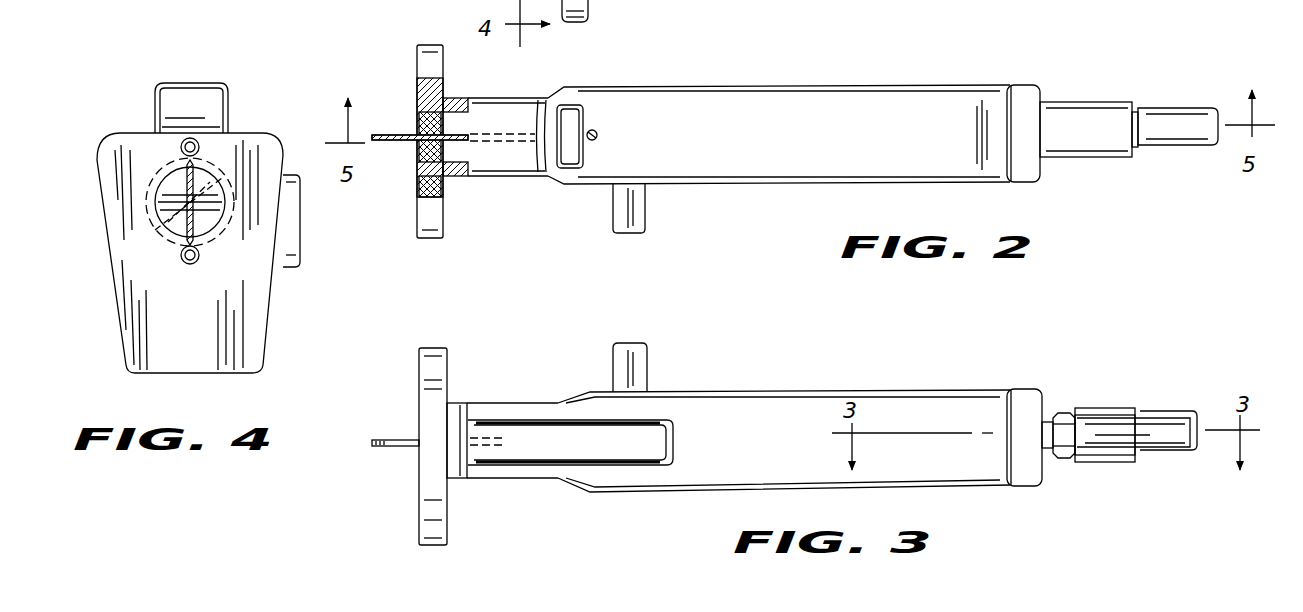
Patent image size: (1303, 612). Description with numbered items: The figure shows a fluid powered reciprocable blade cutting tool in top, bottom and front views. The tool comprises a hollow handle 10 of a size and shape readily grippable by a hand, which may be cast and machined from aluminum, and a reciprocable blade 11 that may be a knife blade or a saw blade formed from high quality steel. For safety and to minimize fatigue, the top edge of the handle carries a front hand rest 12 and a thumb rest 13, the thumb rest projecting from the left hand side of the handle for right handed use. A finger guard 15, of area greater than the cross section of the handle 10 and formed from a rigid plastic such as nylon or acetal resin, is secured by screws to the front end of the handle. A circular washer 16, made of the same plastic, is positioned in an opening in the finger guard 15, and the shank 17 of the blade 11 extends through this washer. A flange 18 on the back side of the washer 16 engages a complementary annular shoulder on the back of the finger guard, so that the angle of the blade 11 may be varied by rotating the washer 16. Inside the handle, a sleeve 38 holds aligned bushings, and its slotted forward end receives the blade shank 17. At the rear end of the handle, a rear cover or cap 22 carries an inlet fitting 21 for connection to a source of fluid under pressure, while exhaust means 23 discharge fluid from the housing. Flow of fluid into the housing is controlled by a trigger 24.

In FIG. 2, the hollow handle 10 is at (764, 82).
In FIG. 3, the hollow handle 10 is at (799, 387).
In FIG. 2, the reciprocable blade 11 is at (381, 131).
In FIG. 3, the reciprocable blade 11 is at (404, 449).
In FIG. 4, the reciprocable blade 11 is at (178, 175).
In FIG. 2, the front hand rest 12 is at (586, 117).
In FIG. 4, the front hand rest 12 is at (193, 83).
In FIG. 2, the thumb rest 13 is at (647, 210).
In FIG. 3, the thumb rest 13 is at (650, 348).
In FIG. 4, the thumb rest 13 is at (302, 243).
In FIG. 2, the finger guard 15 is at (433, 238).
In FIG. 3, the finger guard 15 is at (450, 527).
In FIG. 4, the finger guard 15 is at (265, 337).
In FIG. 2, the circular washer 16 is at (421, 120).
In FIG. 4, the circular washer 16 is at (178, 222).
In FIG. 2, the shank 17 is at (454, 99).
In FIG. 2, the flange 18 is at (441, 188).
In FIG. 4, the flange 18 is at (165, 255).
In FIG. 3, the inlet fitting 21 is at (1065, 459).
In FIG. 2, the rear cover or cap 22 is at (1026, 83).
In FIG. 3, the rear cover or cap 22 is at (1020, 390).
In FIG. 2, the exhaust means 23 is at (1121, 101).
In FIG. 3, the exhaust means 23 is at (1112, 408).
In FIG. 3, the trigger 24 is at (572, 442).
In FIG. 2, the sleeve 38 is at (459, 177).